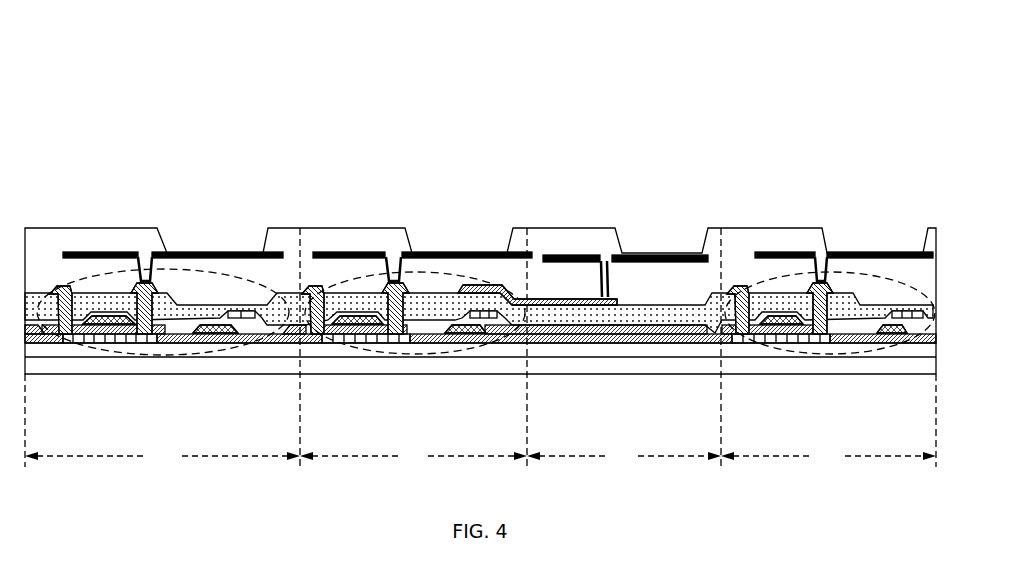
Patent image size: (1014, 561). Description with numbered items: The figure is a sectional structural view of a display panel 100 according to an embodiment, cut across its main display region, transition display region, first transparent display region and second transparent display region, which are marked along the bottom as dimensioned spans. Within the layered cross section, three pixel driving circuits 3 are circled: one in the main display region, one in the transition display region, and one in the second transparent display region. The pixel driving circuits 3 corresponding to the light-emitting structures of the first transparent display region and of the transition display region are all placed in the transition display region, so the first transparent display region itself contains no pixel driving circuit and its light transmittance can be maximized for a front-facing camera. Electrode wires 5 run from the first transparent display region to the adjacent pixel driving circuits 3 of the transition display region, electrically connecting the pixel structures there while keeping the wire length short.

The display panel 100 is at (838, 84).
The pixel driving circuit 3 is at (200, 356).
The electrode wire 5 is at (565, 305).